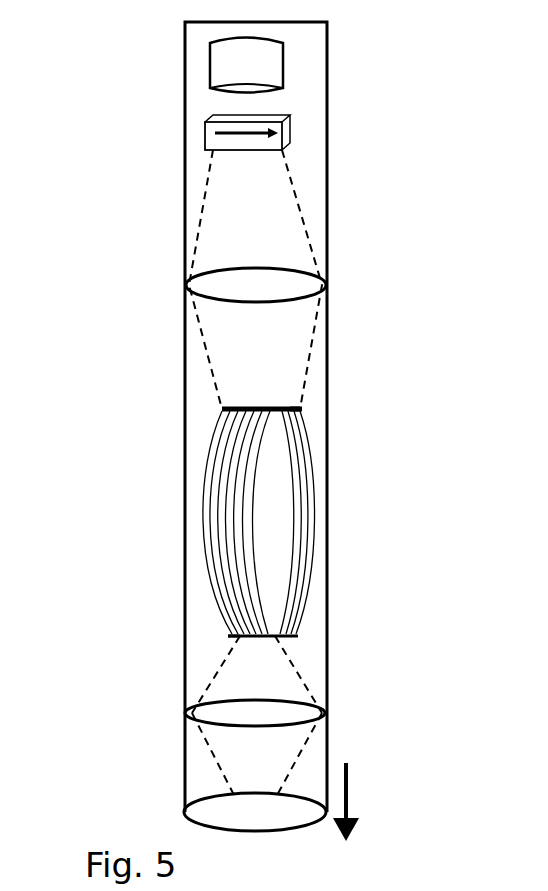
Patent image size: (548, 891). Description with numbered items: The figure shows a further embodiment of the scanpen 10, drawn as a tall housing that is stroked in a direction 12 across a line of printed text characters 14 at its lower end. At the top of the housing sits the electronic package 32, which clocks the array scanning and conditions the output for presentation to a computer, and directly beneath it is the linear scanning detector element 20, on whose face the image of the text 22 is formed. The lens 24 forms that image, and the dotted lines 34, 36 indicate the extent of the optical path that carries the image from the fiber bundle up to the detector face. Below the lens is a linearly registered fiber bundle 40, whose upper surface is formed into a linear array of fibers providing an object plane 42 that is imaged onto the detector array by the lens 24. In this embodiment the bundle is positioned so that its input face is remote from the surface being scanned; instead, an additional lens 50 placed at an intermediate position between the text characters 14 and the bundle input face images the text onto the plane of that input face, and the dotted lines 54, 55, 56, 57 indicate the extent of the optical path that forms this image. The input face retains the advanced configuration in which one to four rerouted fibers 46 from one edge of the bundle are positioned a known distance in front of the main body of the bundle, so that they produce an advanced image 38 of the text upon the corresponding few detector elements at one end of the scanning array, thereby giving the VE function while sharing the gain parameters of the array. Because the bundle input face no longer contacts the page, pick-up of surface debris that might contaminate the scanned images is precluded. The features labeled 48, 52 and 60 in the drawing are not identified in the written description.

The scanpen 10 is at (185, 440).
The direction 12 is at (262, 818).
The text characters 14 is at (270, 805).
The linear scanning detector element 20 is at (259, 154).
The image of the text 22 is at (285, 119).
The lens 24 is at (258, 287).
The electronic package 32 is at (245, 65).
The dotted line 34 is at (311, 350).
The dotted line 36 is at (207, 352).
The advanced image 38 is at (283, 147).
The fiber bundle 40 is at (240, 525).
The object plane 42 is at (260, 408).
The rerouted fibers 46 is at (308, 548).
The input end edge 48 is at (300, 411).
The additional lens 50 is at (258, 712).
The output end of bundle 52 is at (273, 624).
The dotted line 54 is at (298, 755).
The dotted line 55 is at (212, 760).
The dotted line 56 is at (293, 662).
The dotted line 57 is at (217, 682).
The output end edge 60 is at (228, 635).